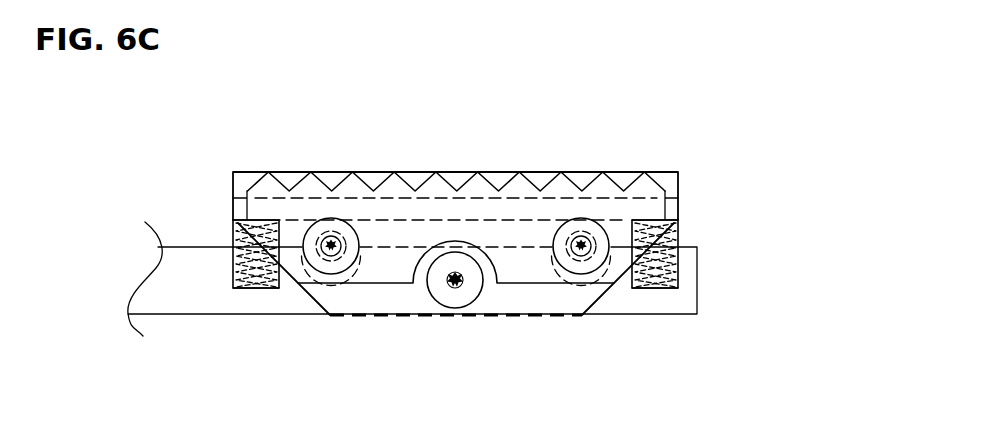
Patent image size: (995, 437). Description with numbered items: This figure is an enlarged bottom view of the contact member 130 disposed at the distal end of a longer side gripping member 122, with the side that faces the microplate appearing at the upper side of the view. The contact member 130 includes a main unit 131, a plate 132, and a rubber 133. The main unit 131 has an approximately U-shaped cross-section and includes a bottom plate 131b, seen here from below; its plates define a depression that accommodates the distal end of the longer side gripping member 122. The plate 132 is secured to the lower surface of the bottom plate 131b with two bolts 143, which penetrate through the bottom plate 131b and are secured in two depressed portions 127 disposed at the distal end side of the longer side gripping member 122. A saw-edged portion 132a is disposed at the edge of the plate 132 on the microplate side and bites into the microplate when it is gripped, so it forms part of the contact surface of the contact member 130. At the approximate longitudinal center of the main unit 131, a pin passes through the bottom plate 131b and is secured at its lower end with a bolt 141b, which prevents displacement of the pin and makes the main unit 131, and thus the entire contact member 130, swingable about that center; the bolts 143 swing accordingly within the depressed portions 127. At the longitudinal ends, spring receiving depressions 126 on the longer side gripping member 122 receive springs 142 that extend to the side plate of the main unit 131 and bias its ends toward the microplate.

The longer side gripping member 122 is at (177, 253).
The spring receiving depression 126 is at (257, 292).
The depressed portion 127 is at (323, 288).
The contact member 130 is at (470, 257).
The main unit 131 is at (456, 311).
The bottom plate 131b is at (397, 304).
The plate 132 is at (537, 287).
The saw-edged portion 132a is at (437, 187).
The rubber 133 is at (455, 151).
The bolt 141b is at (460, 301).
The spring 142 is at (236, 295).
The bolt 143 is at (331, 218).